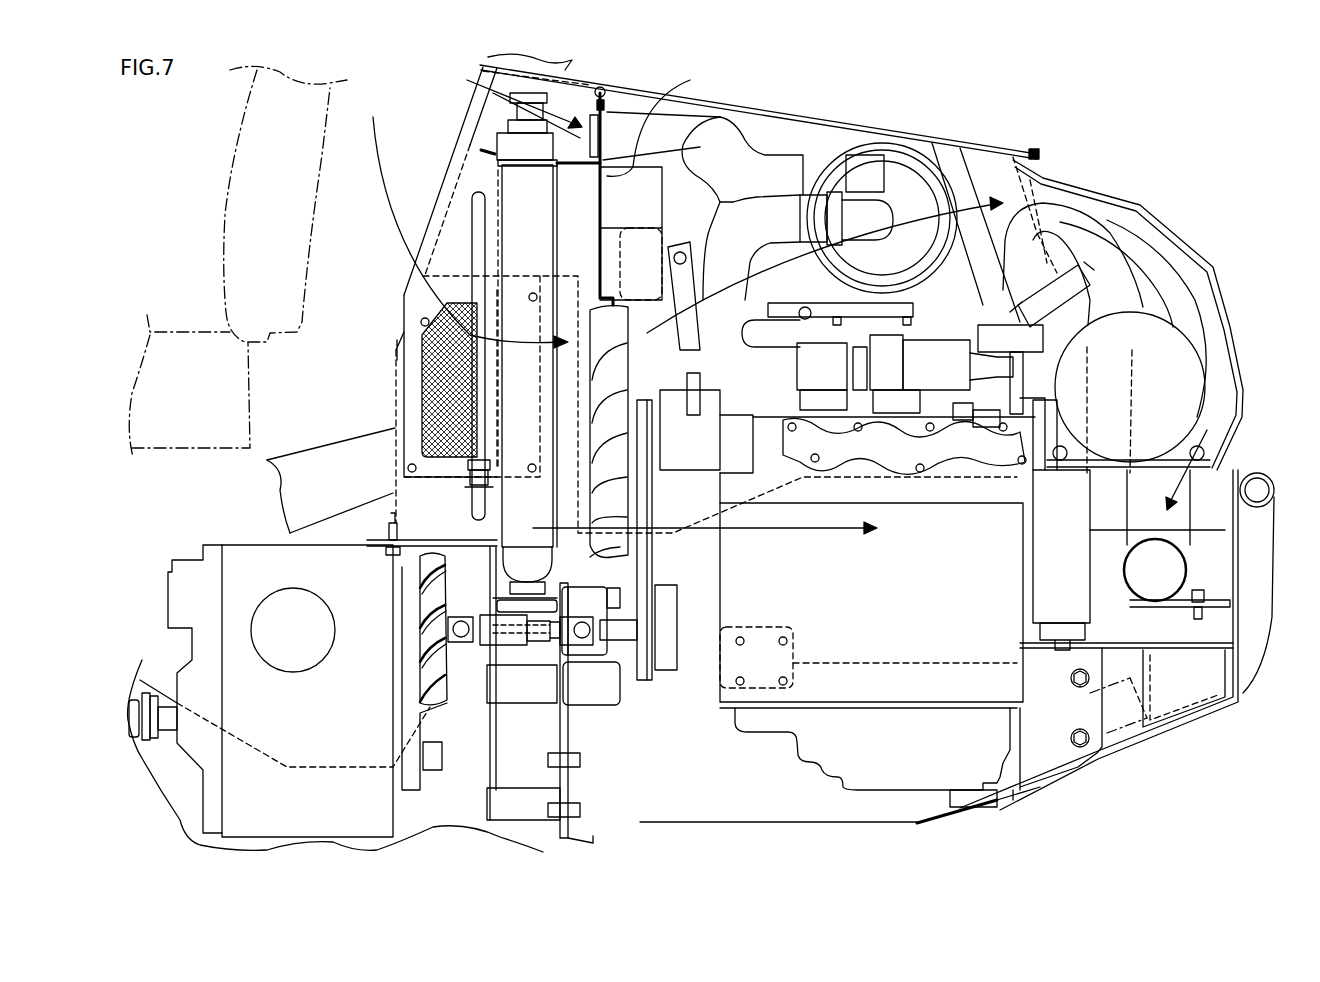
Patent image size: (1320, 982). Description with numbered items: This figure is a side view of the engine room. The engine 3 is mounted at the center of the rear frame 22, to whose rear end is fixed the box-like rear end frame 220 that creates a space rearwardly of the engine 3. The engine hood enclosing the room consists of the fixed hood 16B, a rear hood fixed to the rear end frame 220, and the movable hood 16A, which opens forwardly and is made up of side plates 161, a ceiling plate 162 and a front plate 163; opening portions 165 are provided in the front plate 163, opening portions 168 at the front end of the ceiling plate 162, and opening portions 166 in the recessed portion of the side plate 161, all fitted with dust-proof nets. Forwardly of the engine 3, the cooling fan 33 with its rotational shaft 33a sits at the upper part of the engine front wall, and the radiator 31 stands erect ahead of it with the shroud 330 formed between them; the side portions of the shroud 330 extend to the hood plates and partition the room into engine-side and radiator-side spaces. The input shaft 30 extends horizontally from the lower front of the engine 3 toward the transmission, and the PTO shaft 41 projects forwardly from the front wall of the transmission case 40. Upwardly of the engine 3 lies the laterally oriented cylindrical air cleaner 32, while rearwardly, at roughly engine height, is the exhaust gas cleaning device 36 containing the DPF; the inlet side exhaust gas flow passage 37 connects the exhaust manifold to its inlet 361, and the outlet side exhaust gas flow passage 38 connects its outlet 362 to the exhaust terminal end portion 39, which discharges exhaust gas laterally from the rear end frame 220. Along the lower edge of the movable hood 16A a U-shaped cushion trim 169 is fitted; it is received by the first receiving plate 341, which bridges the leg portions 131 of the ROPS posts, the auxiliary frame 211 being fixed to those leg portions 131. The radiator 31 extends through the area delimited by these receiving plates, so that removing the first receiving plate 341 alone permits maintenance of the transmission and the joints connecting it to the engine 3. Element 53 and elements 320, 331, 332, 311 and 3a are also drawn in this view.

The cab 53 is at (226, 200).
The opening portions 165 is at (440, 230).
The front plate 163 is at (480, 128).
The radiator hose 320 is at (520, 185).
The opening portions 168 is at (601, 87).
The shroud 330 is at (670, 123).
The side plates 161 is at (758, 130).
The intake pipe 331 is at (782, 163).
The movable hood 16A is at (882, 124).
The air cleaner 32 is at (903, 183).
The ceiling plate 162 is at (1003, 150).
The outlet side exhaust gas flow passage 38 is at (1060, 222).
The fixed hood 16B is at (1135, 204).
The exhaust gas cleaning device 36 is at (1180, 367).
The outlet 362 is at (1073, 313).
The radiator 31 is at (547, 203).
The intake hose 332 is at (722, 238).
The radiator core 311 is at (500, 268).
The rotational shaft 33a is at (640, 447).
The cooling fan 33 is at (623, 547).
The inlet side exhaust gas flow passage 37 is at (1060, 460).
The inlet 361 is at (1043, 387).
The exhaust terminal end portion 39 is at (1186, 568).
The fan pulley 3a is at (660, 625).
The opening portions 166 is at (420, 437).
The first receiving plate 341 is at (407, 546).
The auxiliary frame 211 is at (282, 497).
The transmission case 40 is at (243, 542).
The cushion trim 169 is at (380, 535).
The input shaft 30 is at (510, 640).
The leg portion 131 is at (545, 725).
The PTO shaft 41 is at (170, 730).
The engine 3 is at (1000, 742).
The rear frame 22 is at (898, 813).
The rear end frame 220 is at (1177, 723).